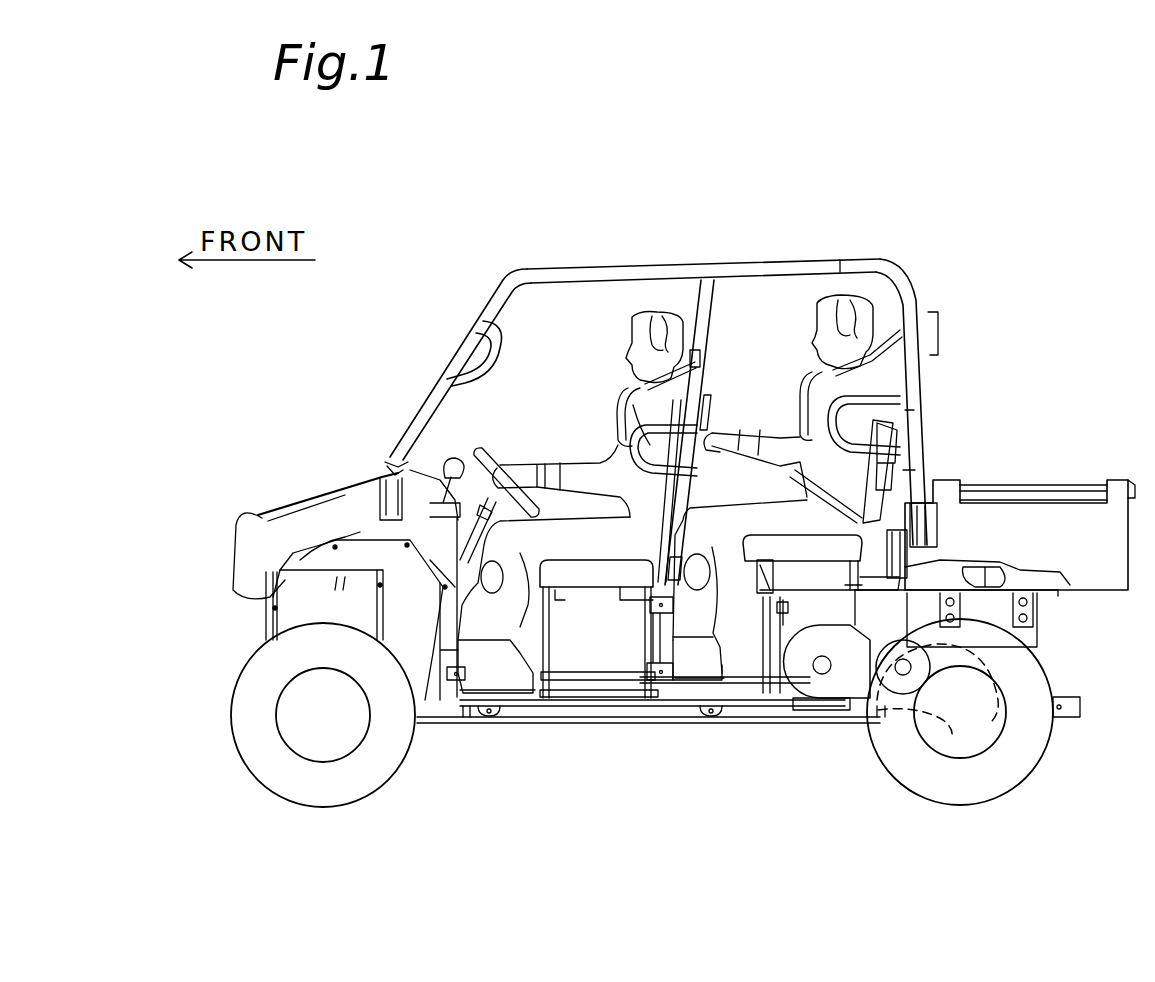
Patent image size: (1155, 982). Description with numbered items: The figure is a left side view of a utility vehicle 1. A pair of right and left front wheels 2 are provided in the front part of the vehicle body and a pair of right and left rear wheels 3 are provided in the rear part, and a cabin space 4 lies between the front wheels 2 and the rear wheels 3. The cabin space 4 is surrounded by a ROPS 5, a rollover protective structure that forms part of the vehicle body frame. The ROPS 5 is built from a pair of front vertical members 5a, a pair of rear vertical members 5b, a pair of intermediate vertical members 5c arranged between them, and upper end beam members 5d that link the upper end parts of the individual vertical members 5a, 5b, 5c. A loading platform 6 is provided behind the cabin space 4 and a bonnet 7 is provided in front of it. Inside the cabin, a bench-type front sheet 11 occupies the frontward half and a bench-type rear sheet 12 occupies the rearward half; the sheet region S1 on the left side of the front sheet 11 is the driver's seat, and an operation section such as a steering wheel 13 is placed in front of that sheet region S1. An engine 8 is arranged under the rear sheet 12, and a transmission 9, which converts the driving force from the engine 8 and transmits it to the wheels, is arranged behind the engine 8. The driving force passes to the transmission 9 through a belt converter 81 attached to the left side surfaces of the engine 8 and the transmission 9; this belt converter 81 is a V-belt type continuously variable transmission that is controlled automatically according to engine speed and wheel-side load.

The utility vehicle 1 is at (917, 230).
The front wheels 2 is at (357, 775).
The rear wheels 3 is at (1007, 768).
The cabin space 4 is at (773, 292).
The ROPS 5 is at (563, 236).
The front vertical members 5a is at (458, 366).
The rear vertical members 5b is at (930, 334).
The intermediate vertical members 5c is at (716, 320).
The upper end beam members 5d is at (683, 278).
The loading platform 6 is at (1055, 512).
The bonnet 7 is at (312, 485).
The engine 8 is at (788, 548).
The belt converter 81 is at (845, 673).
The transmission 9 is at (952, 735).
The front sheet 11 is at (598, 575).
The rear sheet 12 is at (777, 617).
The steering wheel 13 is at (482, 452).
The sheet region S1 is at (555, 410).